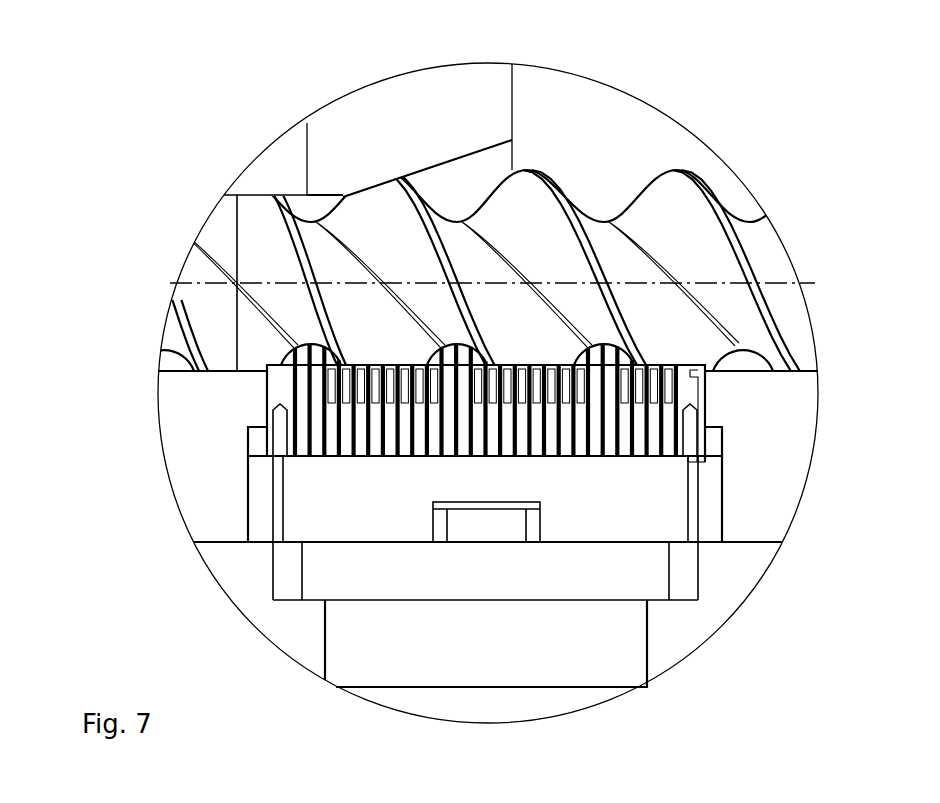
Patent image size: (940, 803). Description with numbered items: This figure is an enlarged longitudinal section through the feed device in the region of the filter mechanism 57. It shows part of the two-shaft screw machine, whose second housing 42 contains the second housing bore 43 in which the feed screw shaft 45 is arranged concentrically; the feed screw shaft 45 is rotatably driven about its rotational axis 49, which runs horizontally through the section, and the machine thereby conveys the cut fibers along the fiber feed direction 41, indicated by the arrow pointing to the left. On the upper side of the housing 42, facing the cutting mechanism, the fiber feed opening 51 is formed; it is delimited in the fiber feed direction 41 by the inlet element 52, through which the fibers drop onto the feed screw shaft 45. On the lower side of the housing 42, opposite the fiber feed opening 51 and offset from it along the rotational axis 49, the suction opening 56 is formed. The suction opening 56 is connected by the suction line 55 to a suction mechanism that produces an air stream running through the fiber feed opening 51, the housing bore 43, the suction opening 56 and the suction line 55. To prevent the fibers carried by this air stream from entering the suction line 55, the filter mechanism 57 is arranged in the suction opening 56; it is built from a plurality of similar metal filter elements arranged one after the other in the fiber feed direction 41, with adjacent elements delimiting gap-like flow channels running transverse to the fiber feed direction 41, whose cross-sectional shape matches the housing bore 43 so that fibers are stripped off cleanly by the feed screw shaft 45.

The fiber feed direction 41 is at (68, 371).
The second housing 42 is at (265, 167).
The second housing bore 43 is at (295, 205).
The feed screw shaft 45 is at (247, 233).
The rotational axis 49 is at (213, 283).
The fiber feed opening 51 is at (647, 106).
The inlet element 52 is at (332, 106).
The suction line 55 is at (635, 633).
The suction opening 56 is at (681, 462).
The filter mechanism 57 is at (313, 460).